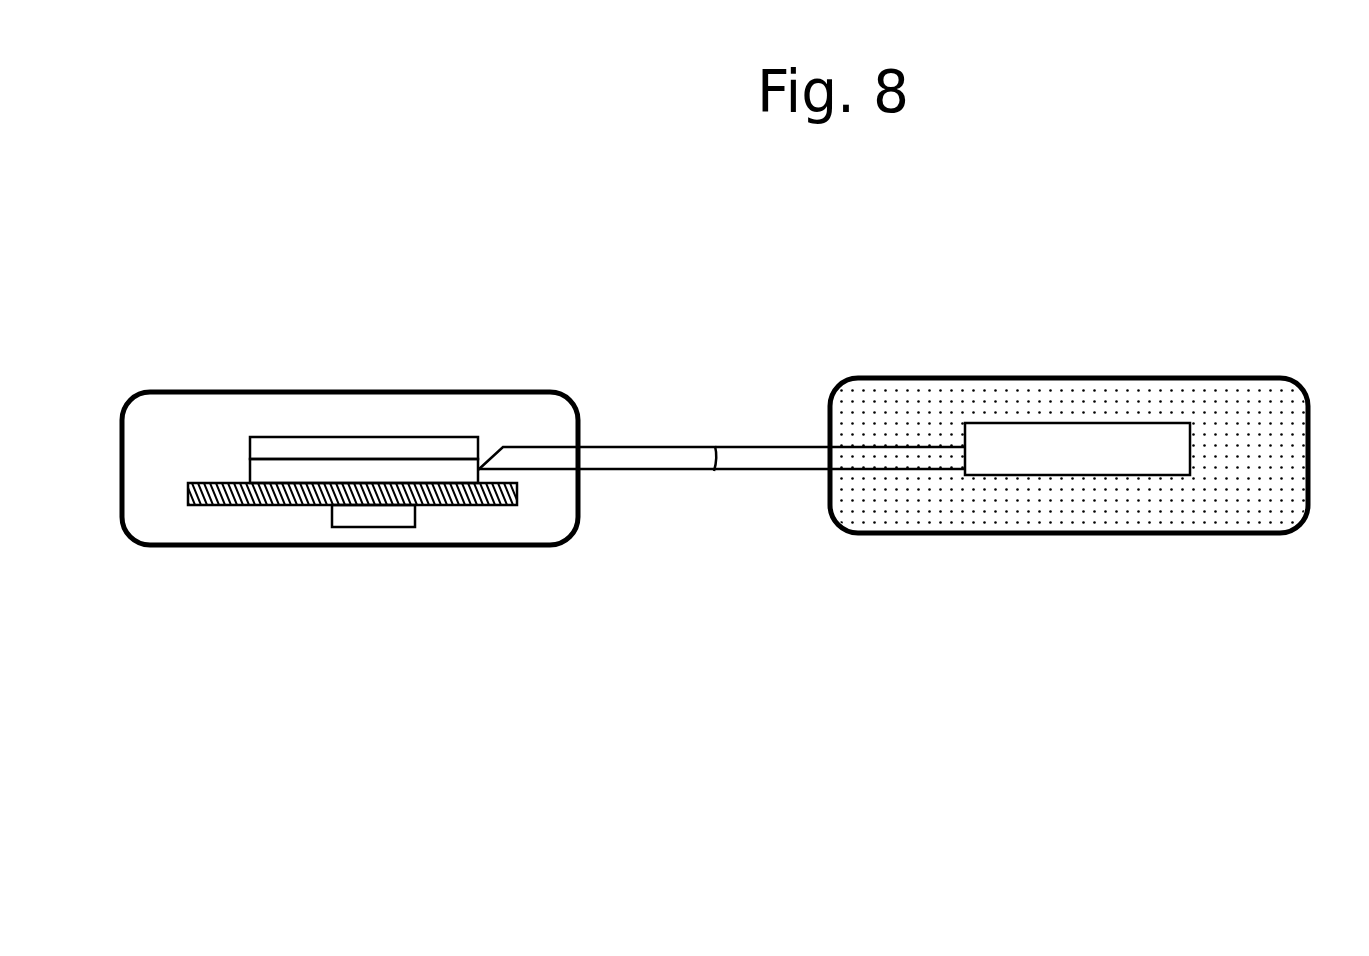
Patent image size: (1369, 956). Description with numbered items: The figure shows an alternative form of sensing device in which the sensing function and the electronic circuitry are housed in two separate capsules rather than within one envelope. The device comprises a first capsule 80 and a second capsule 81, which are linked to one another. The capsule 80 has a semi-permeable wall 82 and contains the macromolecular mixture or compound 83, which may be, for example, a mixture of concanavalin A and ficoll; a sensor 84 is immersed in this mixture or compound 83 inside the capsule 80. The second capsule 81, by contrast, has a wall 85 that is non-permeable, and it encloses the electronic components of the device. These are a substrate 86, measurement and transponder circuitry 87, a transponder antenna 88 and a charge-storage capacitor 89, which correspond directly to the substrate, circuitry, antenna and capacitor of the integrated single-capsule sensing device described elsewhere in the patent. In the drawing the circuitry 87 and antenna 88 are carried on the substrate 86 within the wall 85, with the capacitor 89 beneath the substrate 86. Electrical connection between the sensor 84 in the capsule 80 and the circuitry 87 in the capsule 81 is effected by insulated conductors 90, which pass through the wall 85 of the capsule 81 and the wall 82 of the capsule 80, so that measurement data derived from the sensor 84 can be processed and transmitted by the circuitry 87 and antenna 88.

The capsule 80 is at (923, 454).
The capsule 81 is at (376, 497).
The semi-permeable wall 82 is at (1262, 537).
The macromolecular mixture or compound 83 is at (1172, 503).
The sensor 84 is at (1088, 442).
The wall 85 is at (475, 547).
The substrate 86 is at (247, 505).
The measurement and transponder circuitry 87 is at (272, 470).
The transponder antenna 88 is at (341, 453).
The charge-storage capacitor 89 is at (370, 517).
The insulated conductors 90 is at (740, 471).